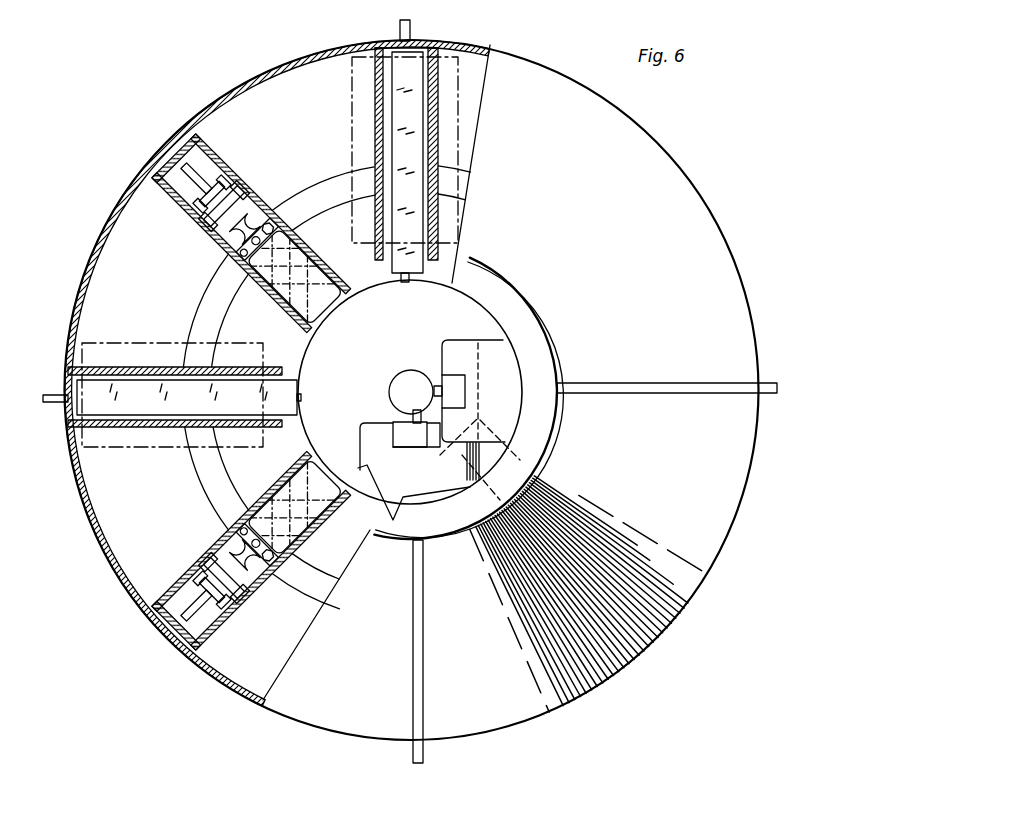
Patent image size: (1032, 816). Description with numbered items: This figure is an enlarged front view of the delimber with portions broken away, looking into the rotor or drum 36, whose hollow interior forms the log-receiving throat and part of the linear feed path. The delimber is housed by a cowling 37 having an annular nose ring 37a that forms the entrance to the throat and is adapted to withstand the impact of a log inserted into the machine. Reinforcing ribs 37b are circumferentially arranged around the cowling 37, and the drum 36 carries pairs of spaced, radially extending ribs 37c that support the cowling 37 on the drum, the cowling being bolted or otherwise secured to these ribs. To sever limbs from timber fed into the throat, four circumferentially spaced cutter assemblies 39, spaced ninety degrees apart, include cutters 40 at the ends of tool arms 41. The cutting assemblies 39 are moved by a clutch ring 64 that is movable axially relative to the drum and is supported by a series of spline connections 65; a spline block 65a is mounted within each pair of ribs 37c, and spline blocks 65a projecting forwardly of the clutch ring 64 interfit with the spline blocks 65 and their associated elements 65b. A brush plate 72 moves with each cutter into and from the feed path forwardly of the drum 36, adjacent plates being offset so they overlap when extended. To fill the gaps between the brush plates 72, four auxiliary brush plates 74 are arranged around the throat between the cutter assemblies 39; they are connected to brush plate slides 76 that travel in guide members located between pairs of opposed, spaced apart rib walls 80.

The drum 36 is at (300, 383).
The cowling 37 is at (466, 48).
The annular nose ring 37a is at (536, 362).
The reinforcing ribs 37b is at (690, 383).
The radially extending ribs 37c is at (232, 168).
The cutter assemblies 39 is at (412, 158).
The cutters 40 is at (487, 340).
The tool arms 41 is at (434, 391).
The clutch ring 64 is at (335, 179).
The spline connections 65 is at (212, 232).
The spline block 65a is at (226, 208).
The clamp nut 65b is at (240, 252).
The brush plate 72 is at (480, 365).
The auxiliary brush plates 74 is at (290, 312).
The brush plate slides 76 is at (320, 236).
The rib walls 80 is at (183, 206).